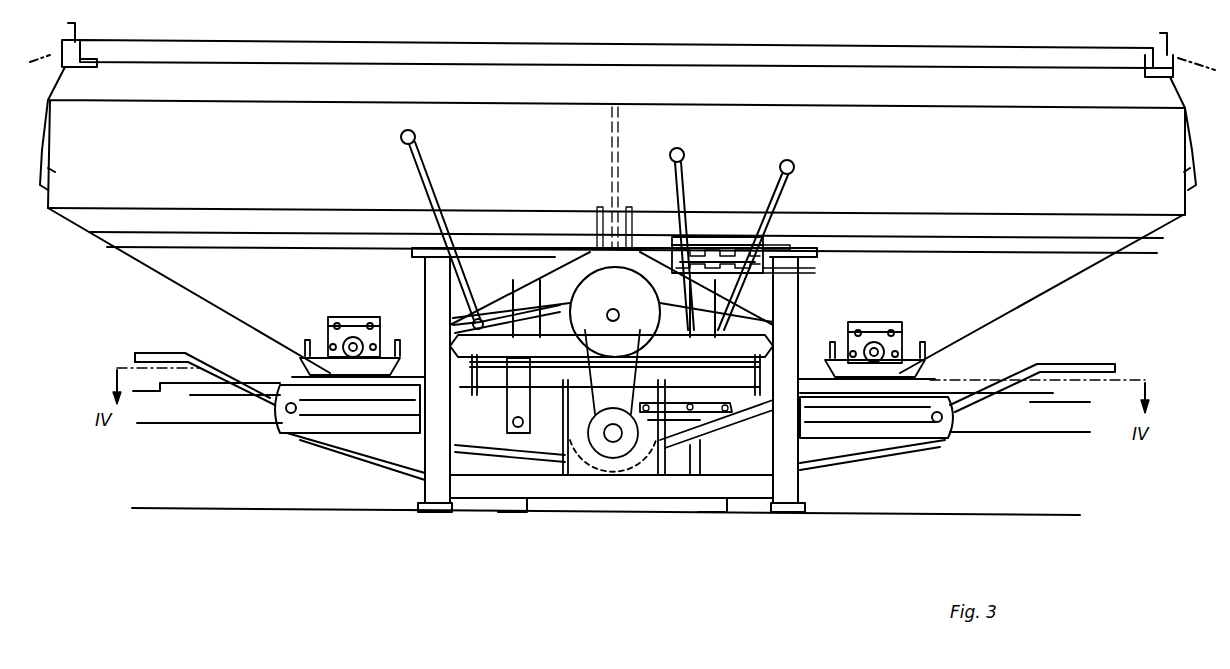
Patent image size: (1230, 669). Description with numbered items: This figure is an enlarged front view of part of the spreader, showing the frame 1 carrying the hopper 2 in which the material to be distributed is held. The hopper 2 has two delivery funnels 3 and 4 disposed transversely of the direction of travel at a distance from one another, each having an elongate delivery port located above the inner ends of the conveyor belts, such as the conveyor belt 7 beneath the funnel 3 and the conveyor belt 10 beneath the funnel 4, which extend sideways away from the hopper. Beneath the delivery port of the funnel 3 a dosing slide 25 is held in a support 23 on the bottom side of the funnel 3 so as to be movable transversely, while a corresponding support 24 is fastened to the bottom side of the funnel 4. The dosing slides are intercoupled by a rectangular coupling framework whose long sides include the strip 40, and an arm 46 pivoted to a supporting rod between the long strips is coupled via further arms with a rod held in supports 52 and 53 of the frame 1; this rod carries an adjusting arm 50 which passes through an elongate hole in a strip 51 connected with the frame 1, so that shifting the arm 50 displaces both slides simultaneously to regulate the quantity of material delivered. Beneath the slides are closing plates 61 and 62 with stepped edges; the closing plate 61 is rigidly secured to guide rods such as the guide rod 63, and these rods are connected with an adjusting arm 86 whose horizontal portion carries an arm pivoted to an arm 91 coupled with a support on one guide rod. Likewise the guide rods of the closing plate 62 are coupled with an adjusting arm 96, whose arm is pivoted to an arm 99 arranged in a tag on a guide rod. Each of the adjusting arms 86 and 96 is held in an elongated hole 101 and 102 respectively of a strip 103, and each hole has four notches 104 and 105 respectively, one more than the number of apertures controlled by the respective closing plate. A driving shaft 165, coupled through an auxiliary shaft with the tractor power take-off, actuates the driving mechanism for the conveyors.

The frame 1 is at (413, 485).
The hopper 2 is at (862, 62).
The delivery funnel 3 is at (180, 275).
The delivery funnel 4 is at (1055, 280).
The conveyor belt 7 is at (183, 425).
The conveyor belt 10 is at (1088, 432).
The support 23 is at (312, 355).
The support 24 is at (915, 368).
The dosing slide 25 is at (290, 365).
The strip 40 is at (640, 340).
The arm 46 is at (600, 318).
The adjusting arm 50 is at (405, 152).
The strip 51 is at (482, 248).
The support 52 is at (510, 410).
The support 53 is at (545, 480).
The closing plate 61 is at (385, 352).
The closing plate 62 is at (838, 365).
The guide rod 63 is at (615, 312).
The adjusting arm 86 is at (672, 170).
The adjusting arm 96 is at (797, 178).
The arm 99 is at (650, 440).
The arm 91 is at (692, 450).
The elongated hole 101 is at (668, 282).
The elongated hole 102 is at (735, 255).
The strip 103 is at (770, 243).
The notches 104 is at (800, 283).
The notches 105 is at (700, 250).
The driving shaft 165 is at (610, 460).